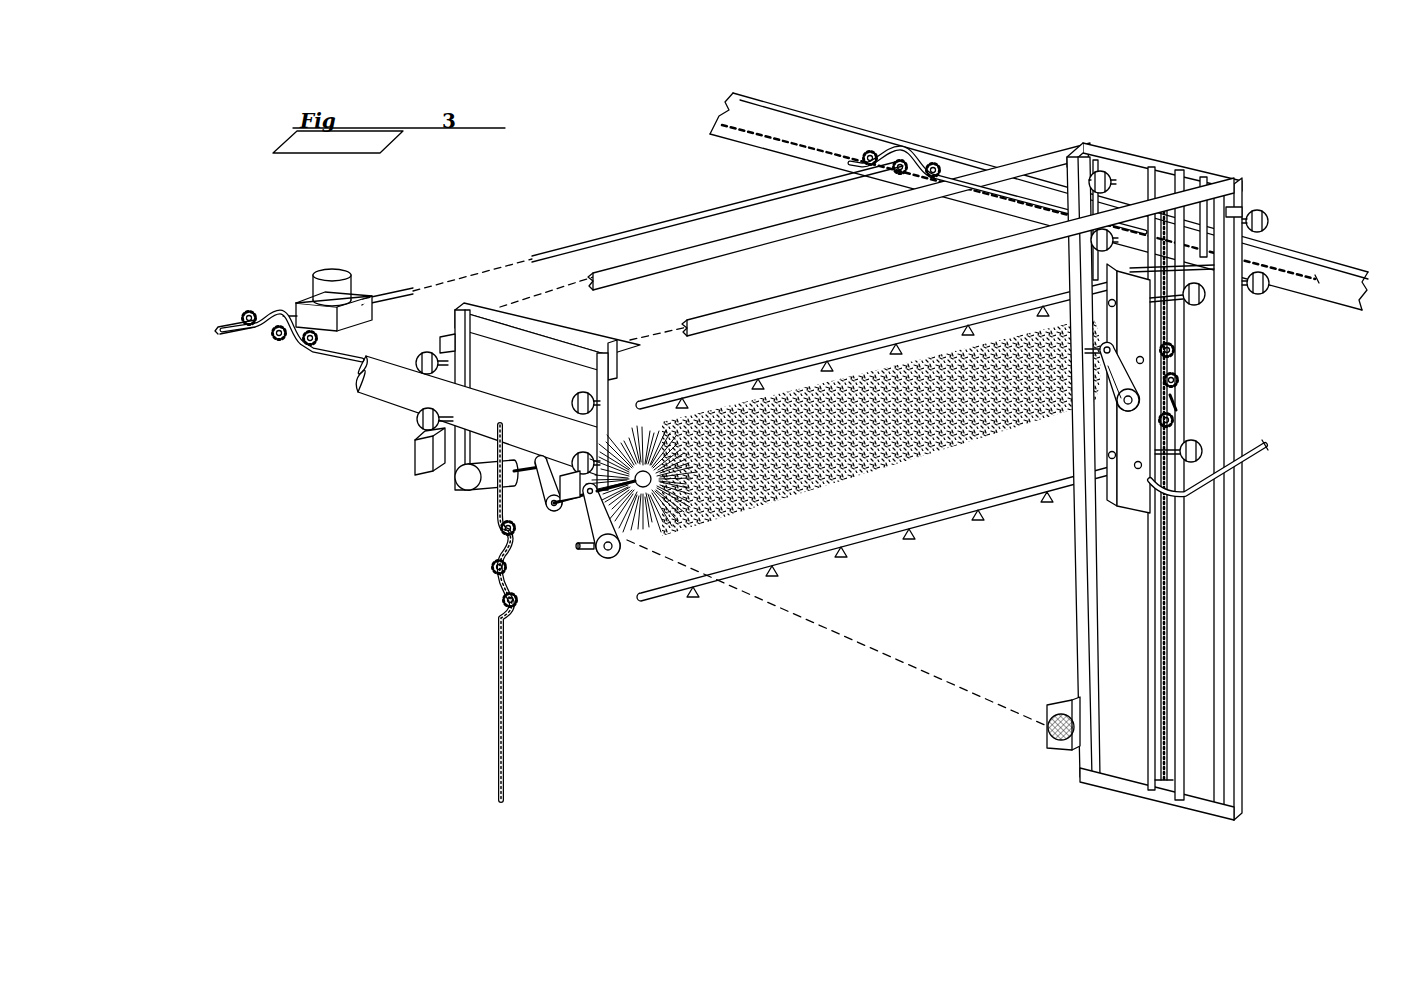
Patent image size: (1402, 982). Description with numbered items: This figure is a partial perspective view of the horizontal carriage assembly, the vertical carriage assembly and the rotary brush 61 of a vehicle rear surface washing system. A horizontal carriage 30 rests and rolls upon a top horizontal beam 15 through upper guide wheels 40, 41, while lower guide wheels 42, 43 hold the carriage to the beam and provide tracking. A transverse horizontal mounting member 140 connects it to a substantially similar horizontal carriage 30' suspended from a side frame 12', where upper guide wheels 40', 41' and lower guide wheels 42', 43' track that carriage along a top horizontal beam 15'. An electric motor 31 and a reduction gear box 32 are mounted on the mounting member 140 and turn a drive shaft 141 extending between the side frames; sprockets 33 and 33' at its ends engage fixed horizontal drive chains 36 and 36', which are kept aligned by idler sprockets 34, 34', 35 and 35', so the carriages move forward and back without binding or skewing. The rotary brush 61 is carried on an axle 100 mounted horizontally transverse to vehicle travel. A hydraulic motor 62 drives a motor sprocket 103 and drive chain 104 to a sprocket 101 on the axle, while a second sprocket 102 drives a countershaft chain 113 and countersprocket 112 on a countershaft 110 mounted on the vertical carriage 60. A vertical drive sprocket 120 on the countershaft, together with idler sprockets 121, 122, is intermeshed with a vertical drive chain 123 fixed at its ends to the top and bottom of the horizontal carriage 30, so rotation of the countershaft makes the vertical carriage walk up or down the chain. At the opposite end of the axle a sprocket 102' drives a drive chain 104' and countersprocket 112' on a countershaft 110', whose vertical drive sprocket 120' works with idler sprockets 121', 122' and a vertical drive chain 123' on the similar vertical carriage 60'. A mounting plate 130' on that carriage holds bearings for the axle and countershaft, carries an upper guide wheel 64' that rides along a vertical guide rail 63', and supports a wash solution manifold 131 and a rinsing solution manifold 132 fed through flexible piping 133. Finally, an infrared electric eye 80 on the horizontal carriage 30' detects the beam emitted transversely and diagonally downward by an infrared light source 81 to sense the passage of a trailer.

The side frame 12' is at (1366, 229).
The top horizontal beam 15 is at (498, 396).
The top horizontal beam 15' is at (1039, 198).
The horizontal carriage 30 is at (334, 243).
The horizontal carriage 30' is at (1163, 467).
The electric motor 31 is at (338, 273).
The reduction gear box 32 is at (357, 317).
The drive sprocket 33 is at (288, 359).
The drive sprocket 33' is at (997, 160).
The idler sprocket 34 is at (247, 293).
The idler sprocket 34' is at (872, 126).
The idler sprocket 35 is at (314, 373).
The idler sprocket 35' is at (952, 136).
The horizontal drive chain 36 is at (352, 390).
The horizontal drive chain 36' is at (1018, 204).
The upper guide wheel 40 is at (424, 347).
The upper guide wheel 40' is at (1120, 152).
The upper guide wheel 41 is at (621, 385).
The upper guide wheel 41' is at (1282, 204).
The lower guide wheel 42 is at (417, 429).
The lower guide wheel 42' is at (1071, 252).
The lower guide wheel 43 is at (616, 426).
The lower guide wheel 43' is at (1270, 305).
The vertical carriage 60 is at (401, 592).
The vertical carriage 60' is at (1283, 512).
The rotary brush 61 is at (791, 486).
The hydraulic motor 62 is at (462, 481).
The vertical guide rail 63' is at (1129, 478).
The upper guide wheel 64' is at (1218, 322).
The infrared electric eye 80 is at (1060, 697).
The infrared light source 81 is at (423, 453).
The axle 100 is at (565, 476).
The sprocket 101 is at (553, 510).
The sprocket 102 is at (584, 521).
The sprocket 102' is at (1118, 362).
The motor sprocket 103 is at (537, 456).
The drive chain 104 is at (529, 490).
The drive chain 104' is at (1072, 418).
The countershaft 110 is at (574, 579).
The countershaft 110' is at (1231, 413).
The countersprocket 112 is at (607, 589).
The countersprocket 112' is at (1125, 421).
The countershaft chain 113 is at (619, 550).
The vertical drive sprocket 120 is at (471, 593).
The vertical drive sprocket 120' is at (1232, 390).
The idler sprocket 121 is at (482, 545).
The idler sprocket 121' is at (1227, 362).
The idler sprocket 122 is at (480, 631).
The idler sprocket 122' is at (1244, 432).
The vertical drive chain 123 is at (467, 612).
The vertical drive chain 123' is at (1222, 493).
The mounting plate 130' is at (1156, 417).
The wash solution manifold 131 is at (922, 330).
The rinsing solution manifold 132 is at (1017, 498).
The flexible piping 133 is at (1264, 457).
The transverse horizontal mounting member 140 is at (795, 297).
The drive shaft 141 is at (620, 233).